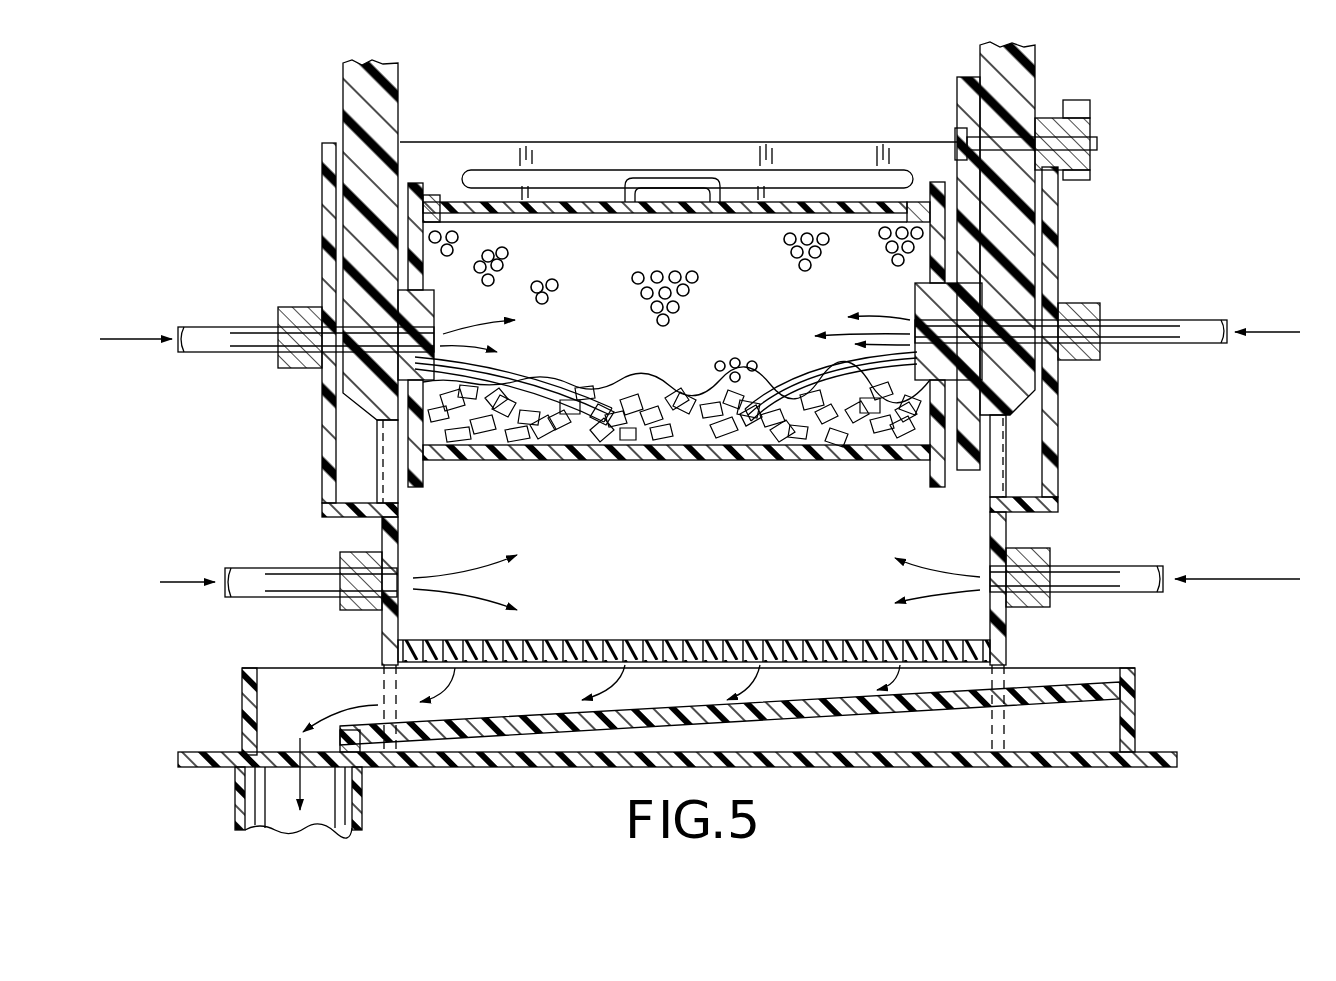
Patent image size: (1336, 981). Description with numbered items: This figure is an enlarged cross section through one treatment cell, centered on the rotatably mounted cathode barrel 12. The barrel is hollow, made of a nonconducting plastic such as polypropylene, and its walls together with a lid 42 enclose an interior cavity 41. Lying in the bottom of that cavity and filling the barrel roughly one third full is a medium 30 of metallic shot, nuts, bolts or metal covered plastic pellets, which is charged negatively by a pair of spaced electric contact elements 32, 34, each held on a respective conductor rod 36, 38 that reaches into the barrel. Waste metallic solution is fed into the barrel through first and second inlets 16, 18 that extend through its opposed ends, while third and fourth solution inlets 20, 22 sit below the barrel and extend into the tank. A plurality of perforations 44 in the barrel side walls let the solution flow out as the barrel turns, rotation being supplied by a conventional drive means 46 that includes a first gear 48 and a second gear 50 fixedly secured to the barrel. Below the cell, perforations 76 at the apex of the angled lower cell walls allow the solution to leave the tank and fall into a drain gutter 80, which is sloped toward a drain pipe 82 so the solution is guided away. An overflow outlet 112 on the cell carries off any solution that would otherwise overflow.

The cathode barrel 12 is at (935, 178).
The first inlet 16 is at (960, 330).
The second inlet 18 is at (388, 328).
The third solution inlet 20 is at (1015, 580).
The fourth solution inlet 22 is at (372, 578).
The medium 30 is at (702, 432).
The electric contact element 32 is at (765, 427).
The electric contact element 34 is at (601, 422).
The conductor rod 36 is at (855, 376).
The conductor rod 38 is at (487, 376).
The interior cavity 41 is at (553, 265).
The lid 42 is at (520, 200).
The perforations 44 is at (510, 448).
The drive means 46 is at (1093, 112).
The first gear 48 is at (957, 105).
The second gear 50 is at (975, 235).
The perforations 76 is at (592, 652).
The drain gutter 80 is at (1093, 690).
The drain pipe 82 is at (237, 803).
The overflow outlet 112 is at (735, 178).